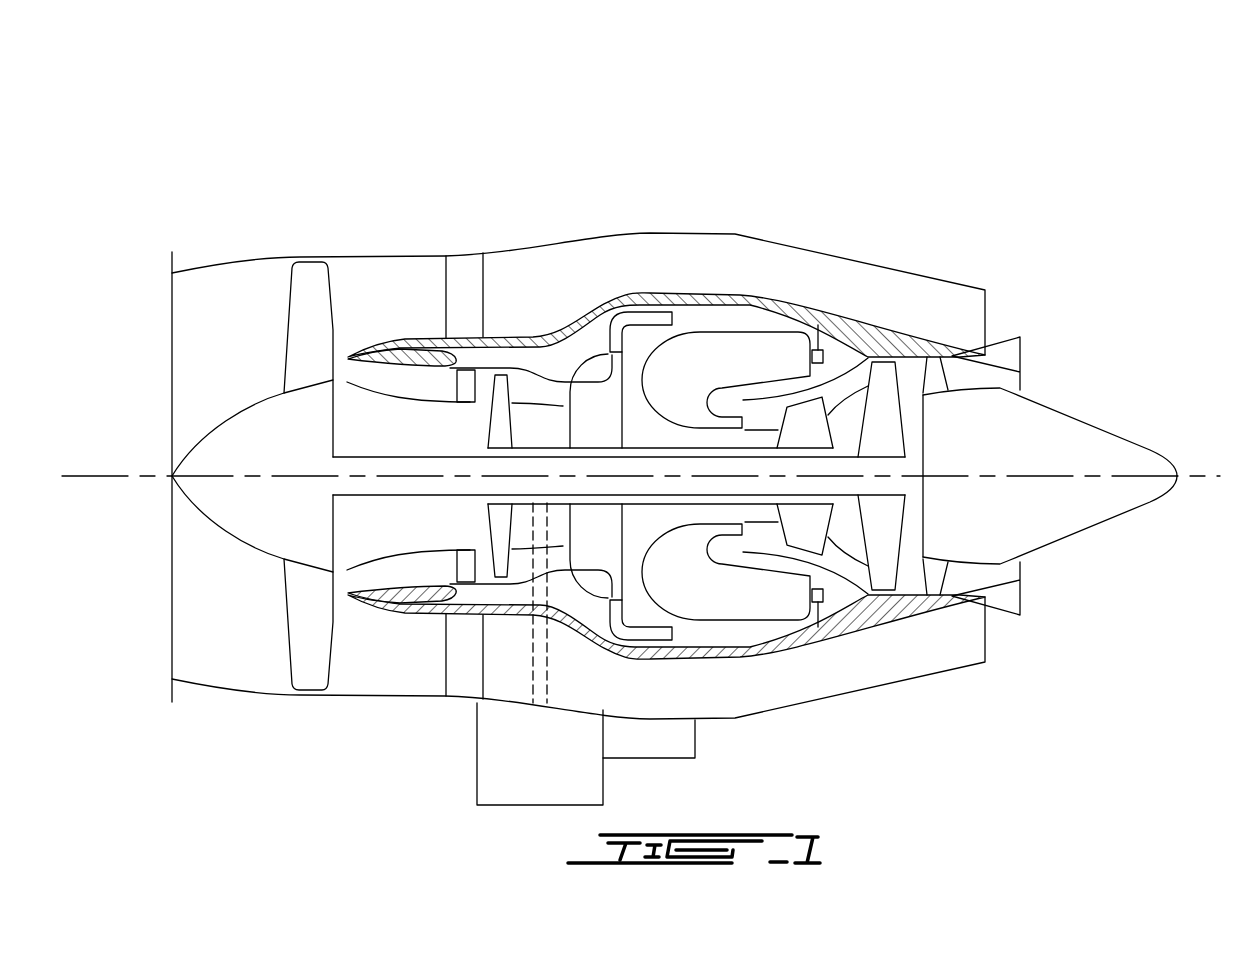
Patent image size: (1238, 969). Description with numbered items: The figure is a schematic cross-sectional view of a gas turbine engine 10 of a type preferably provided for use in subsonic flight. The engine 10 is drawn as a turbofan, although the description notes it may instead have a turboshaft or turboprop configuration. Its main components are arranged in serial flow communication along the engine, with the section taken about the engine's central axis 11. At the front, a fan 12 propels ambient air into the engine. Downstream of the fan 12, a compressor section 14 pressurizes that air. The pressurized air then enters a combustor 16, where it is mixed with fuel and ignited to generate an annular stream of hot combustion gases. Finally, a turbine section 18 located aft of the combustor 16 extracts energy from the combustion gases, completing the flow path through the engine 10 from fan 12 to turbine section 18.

The gas turbine engine 10 is at (862, 177).
The central longitudinal axis 11 is at (1210, 476).
The fan 12 is at (305, 613).
The compressor section 14 is at (532, 387).
The combustor 16 is at (727, 350).
The turbine section 18 is at (845, 535).